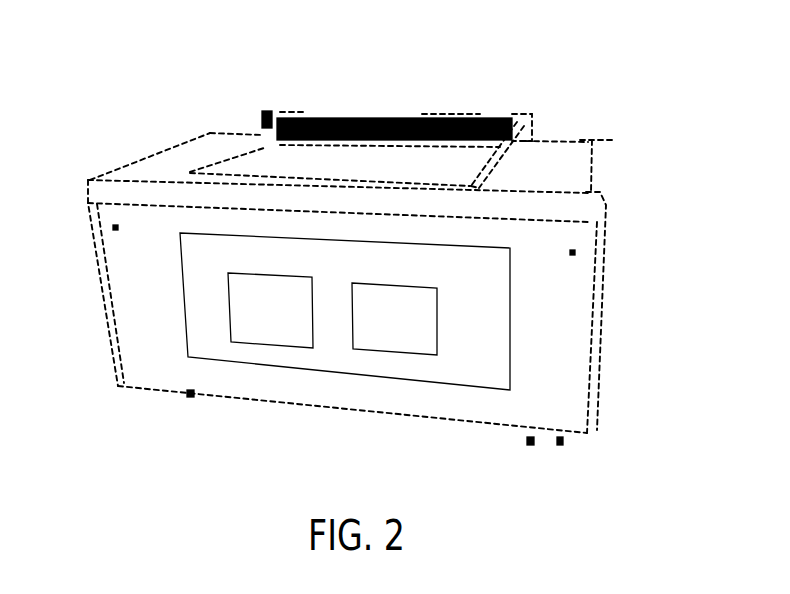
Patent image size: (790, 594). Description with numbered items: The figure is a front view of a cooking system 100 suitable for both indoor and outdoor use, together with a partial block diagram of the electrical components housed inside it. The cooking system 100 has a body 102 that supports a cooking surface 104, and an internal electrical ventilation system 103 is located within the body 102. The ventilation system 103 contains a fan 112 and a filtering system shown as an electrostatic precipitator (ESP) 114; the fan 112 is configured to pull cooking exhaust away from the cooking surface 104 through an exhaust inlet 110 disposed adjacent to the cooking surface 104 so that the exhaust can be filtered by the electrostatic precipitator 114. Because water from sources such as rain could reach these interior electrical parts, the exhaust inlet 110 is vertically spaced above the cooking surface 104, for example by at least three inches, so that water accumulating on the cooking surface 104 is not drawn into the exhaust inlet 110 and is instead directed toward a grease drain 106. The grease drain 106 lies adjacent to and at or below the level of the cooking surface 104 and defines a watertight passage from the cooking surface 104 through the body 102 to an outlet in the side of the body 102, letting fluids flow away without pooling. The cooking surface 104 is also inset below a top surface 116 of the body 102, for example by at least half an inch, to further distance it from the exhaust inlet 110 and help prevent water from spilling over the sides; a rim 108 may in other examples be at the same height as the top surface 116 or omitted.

The cooking system 100 is at (636, 54).
The body 102 is at (102, 292).
The electrical ventilation system 103 is at (493, 283).
The cooking surface 104 is at (267, 162).
The grease drain 106 is at (493, 147).
The rim 108 is at (505, 152).
The exhaust inlet 110 is at (335, 117).
The fan 112 is at (284, 335).
The electrostatic precipitator (ESP) 114 is at (408, 343).
The top surface 116 is at (192, 162).